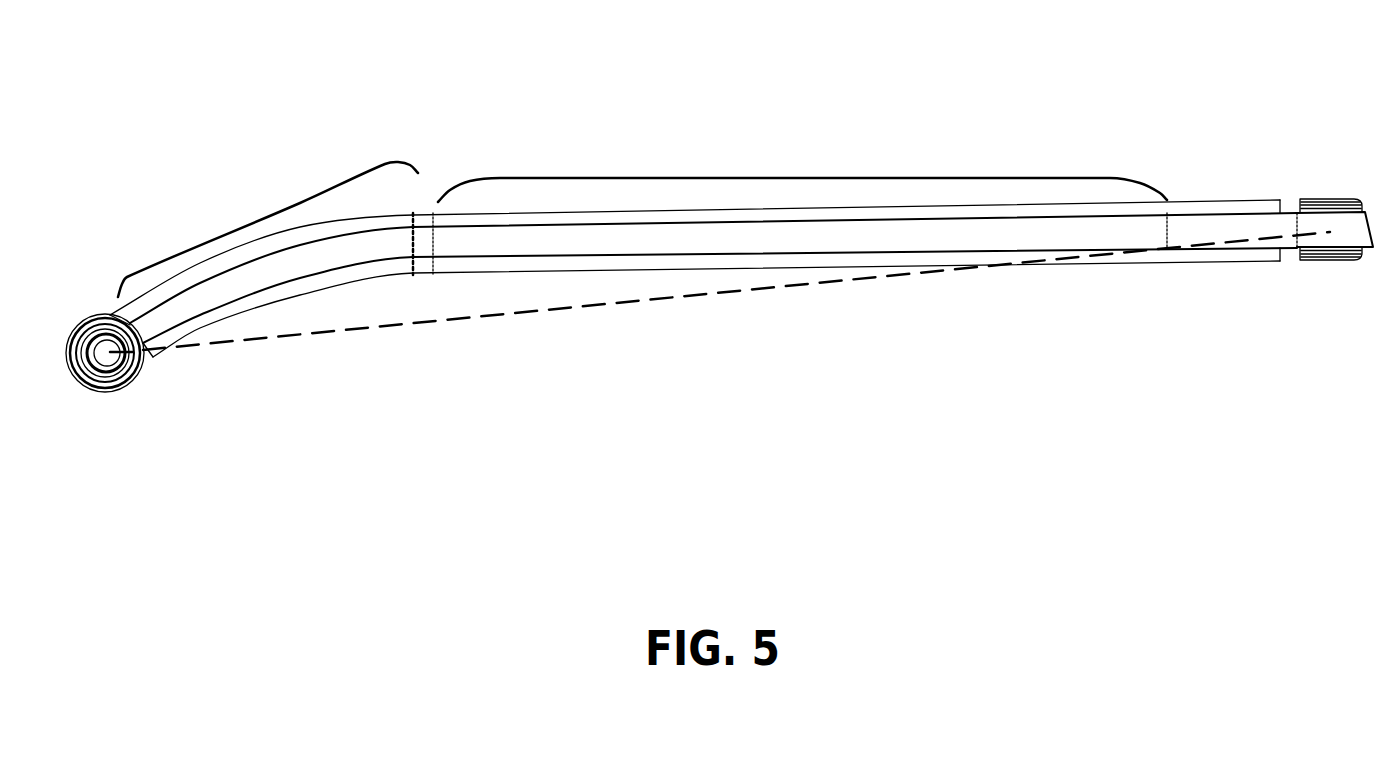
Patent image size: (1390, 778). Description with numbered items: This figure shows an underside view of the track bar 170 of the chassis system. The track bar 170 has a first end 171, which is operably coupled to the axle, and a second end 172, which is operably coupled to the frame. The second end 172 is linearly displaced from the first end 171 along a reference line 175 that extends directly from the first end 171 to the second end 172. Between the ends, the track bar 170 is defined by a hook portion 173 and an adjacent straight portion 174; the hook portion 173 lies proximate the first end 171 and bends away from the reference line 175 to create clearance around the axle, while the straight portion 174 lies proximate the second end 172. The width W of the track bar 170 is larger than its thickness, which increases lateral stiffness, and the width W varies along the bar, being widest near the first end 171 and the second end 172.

The track bar 170 is at (212, 75).
The first end 171 is at (112, 393).
The second end 172 is at (1312, 260).
The hook portion 173 is at (245, 222).
The straight portion 174 is at (817, 178).
The reference line 175 is at (350, 338).
The width W is at (413, 213).